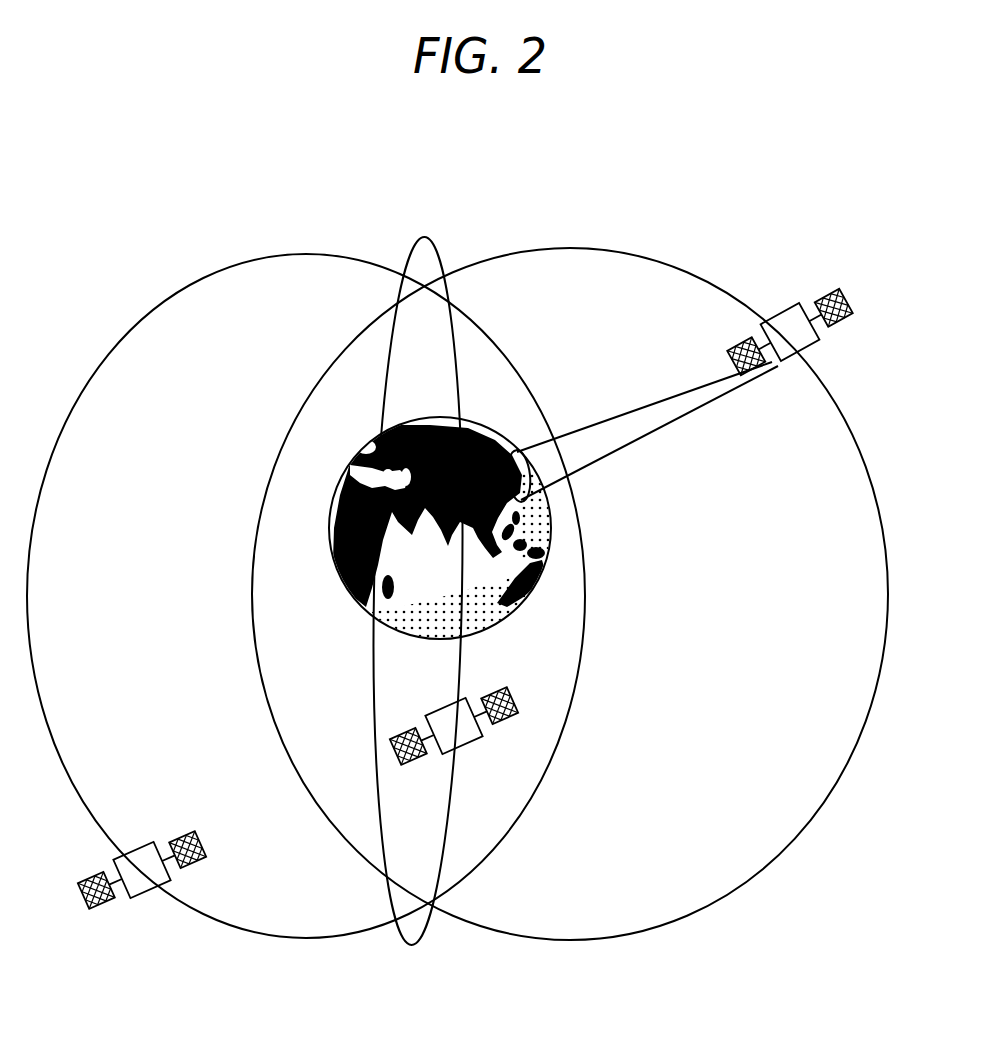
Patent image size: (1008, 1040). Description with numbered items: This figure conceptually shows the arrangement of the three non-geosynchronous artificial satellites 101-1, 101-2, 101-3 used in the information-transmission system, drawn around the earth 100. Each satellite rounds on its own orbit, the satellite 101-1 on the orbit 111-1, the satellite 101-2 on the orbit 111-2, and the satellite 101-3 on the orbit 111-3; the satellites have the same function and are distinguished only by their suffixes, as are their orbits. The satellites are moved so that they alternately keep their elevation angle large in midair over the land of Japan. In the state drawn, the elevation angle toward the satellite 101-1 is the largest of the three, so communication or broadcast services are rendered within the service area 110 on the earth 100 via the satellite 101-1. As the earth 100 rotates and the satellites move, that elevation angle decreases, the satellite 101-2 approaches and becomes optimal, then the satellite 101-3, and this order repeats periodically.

The earth 100 is at (505, 614).
The non-geosynchronous artificial satellite 101-1 is at (803, 300).
The non-geosynchronous artificial satellite 101-2 is at (473, 738).
The non-geosynchronous artificial satellite 101-3 is at (135, 898).
The service area 110 is at (612, 418).
The orbit 111-1 is at (670, 264).
The orbit 111-2 is at (448, 817).
The orbit 111-3 is at (245, 935).